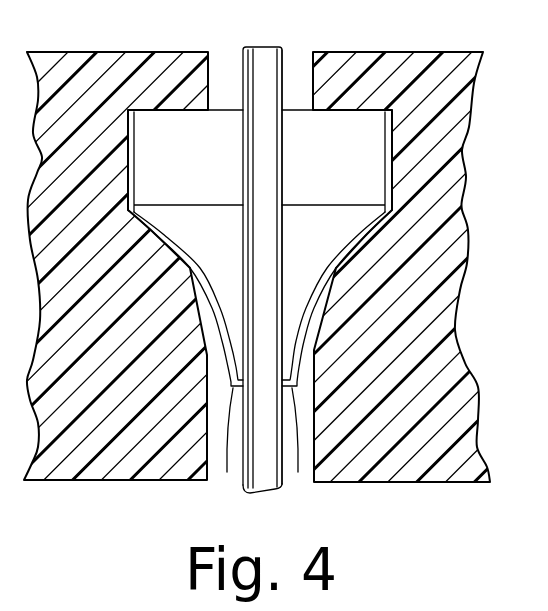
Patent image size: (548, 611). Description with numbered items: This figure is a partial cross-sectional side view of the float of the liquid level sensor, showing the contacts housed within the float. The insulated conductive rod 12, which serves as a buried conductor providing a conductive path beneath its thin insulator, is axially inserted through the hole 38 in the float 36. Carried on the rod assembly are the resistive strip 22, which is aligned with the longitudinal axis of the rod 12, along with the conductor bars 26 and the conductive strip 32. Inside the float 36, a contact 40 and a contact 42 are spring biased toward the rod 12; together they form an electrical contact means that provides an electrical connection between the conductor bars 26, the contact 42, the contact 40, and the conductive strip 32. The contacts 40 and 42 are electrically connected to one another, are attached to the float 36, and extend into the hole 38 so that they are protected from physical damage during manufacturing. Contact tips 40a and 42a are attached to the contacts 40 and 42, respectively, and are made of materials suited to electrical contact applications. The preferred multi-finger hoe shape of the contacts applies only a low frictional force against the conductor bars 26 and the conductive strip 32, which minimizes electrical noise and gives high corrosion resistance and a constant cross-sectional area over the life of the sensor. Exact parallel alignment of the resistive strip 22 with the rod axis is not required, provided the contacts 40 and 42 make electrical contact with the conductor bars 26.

The rod 12 is at (262, 46).
The resistive strip 22 is at (243, 62).
The conductor bars 26 is at (243, 79).
The conductive strip 32 is at (283, 62).
The float 36 is at (142, 51).
The hole 38 is at (293, 468).
The contact 40 is at (189, 257).
The contact 42 is at (329, 257).
The contact tip 40a is at (227, 474).
The contact tip 42a is at (295, 476).